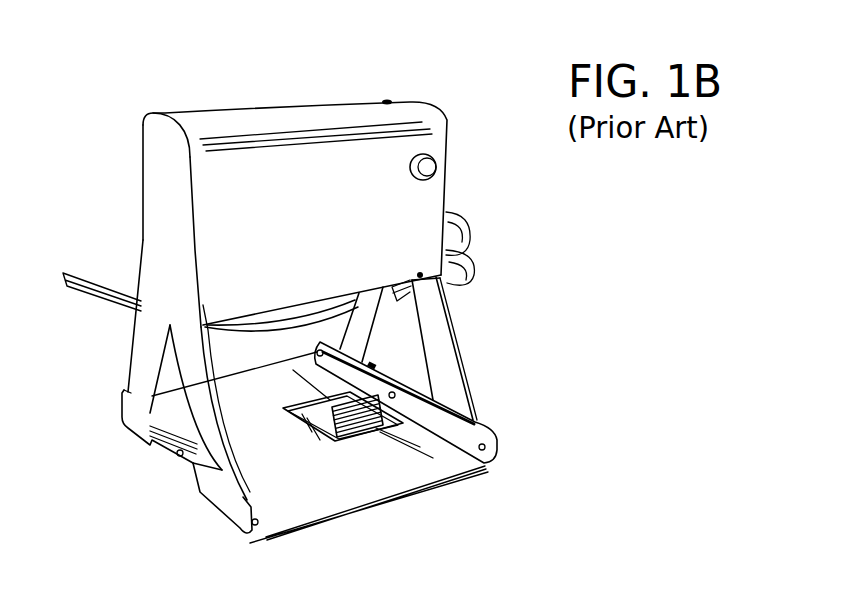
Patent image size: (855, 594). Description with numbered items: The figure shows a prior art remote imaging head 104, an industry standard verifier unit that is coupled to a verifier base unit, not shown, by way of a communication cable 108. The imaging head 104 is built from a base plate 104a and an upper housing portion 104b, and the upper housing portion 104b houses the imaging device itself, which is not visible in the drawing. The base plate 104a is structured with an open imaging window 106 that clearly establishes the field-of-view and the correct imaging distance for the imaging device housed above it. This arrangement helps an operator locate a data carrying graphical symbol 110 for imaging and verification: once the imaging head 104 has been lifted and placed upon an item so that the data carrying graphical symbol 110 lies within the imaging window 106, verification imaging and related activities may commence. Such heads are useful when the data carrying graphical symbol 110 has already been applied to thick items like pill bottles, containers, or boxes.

The imaging head 104 is at (505, 297).
The base plate 104a is at (454, 486).
The upper housing portion 104b is at (192, 105).
The imaging window 106 is at (315, 445).
The communication cable 108 is at (78, 291).
The data carrying graphical symbol 110 is at (337, 407).